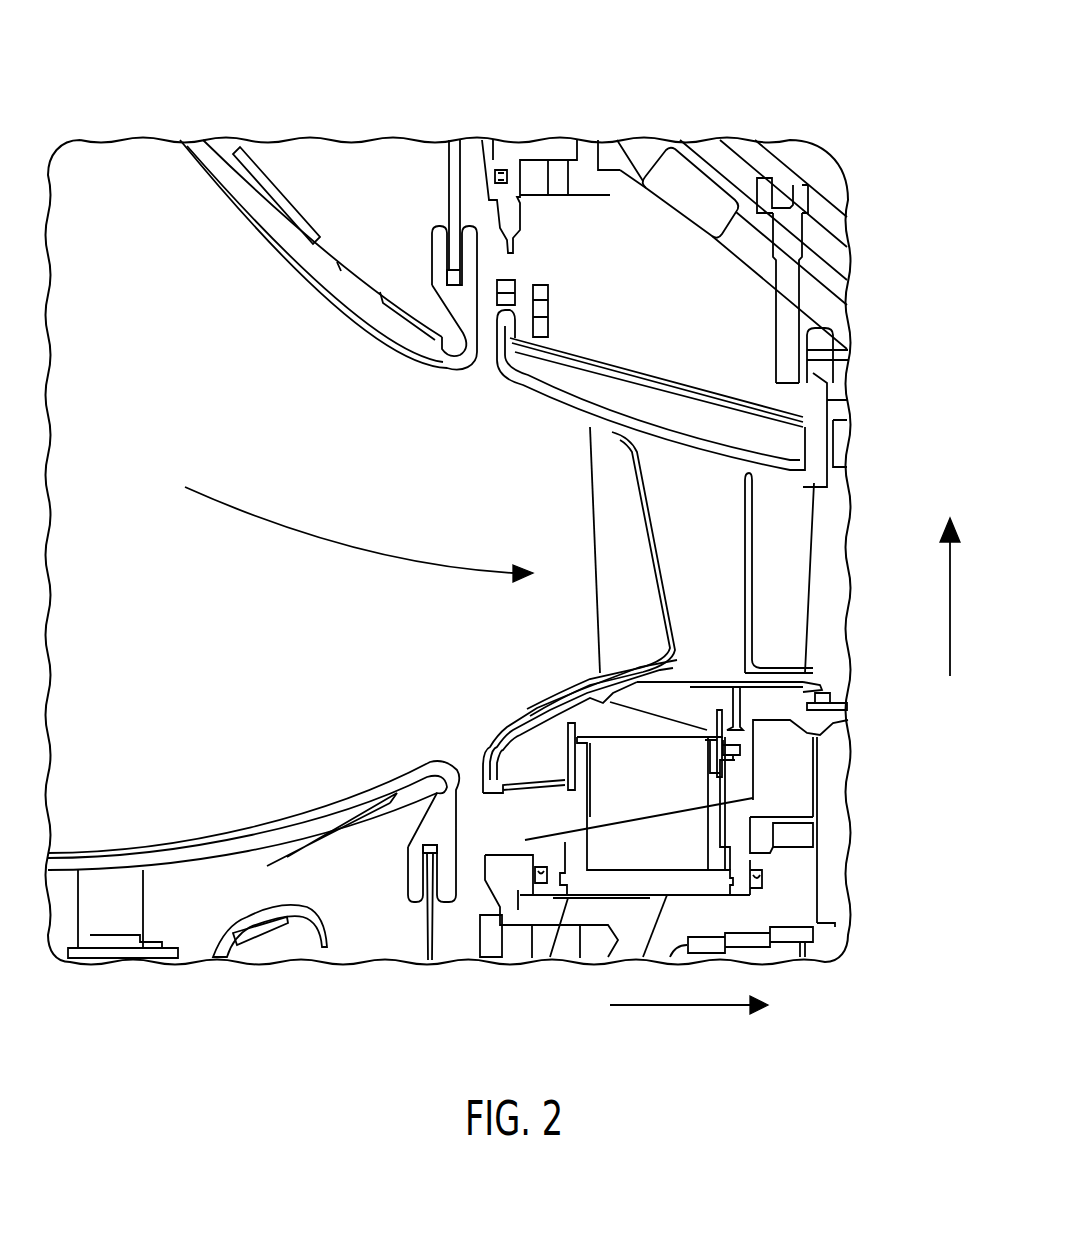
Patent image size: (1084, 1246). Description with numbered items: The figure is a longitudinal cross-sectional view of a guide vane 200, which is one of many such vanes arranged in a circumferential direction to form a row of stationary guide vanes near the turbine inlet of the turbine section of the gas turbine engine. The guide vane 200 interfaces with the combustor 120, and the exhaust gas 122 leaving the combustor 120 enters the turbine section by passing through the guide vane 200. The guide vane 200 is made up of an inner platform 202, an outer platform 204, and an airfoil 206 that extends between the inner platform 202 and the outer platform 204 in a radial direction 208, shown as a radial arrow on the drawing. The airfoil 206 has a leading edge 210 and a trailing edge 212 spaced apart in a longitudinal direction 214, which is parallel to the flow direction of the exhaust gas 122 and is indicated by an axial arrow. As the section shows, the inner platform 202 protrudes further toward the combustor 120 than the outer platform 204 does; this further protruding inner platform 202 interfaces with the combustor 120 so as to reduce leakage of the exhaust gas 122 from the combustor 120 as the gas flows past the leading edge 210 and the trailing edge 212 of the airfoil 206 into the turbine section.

The guide vane 200 is at (813, 82).
The combustor 120 is at (307, 230).
The exhaust gas 122 is at (353, 548).
The inner platform 202 is at (815, 683).
The outer platform 204 is at (820, 435).
The airfoil 206 is at (747, 573).
The radial direction 208 is at (950, 638).
The leading edge 210 is at (643, 520).
The trailing edge 212 is at (747, 540).
The longitudinal direction 214 is at (680, 1005).